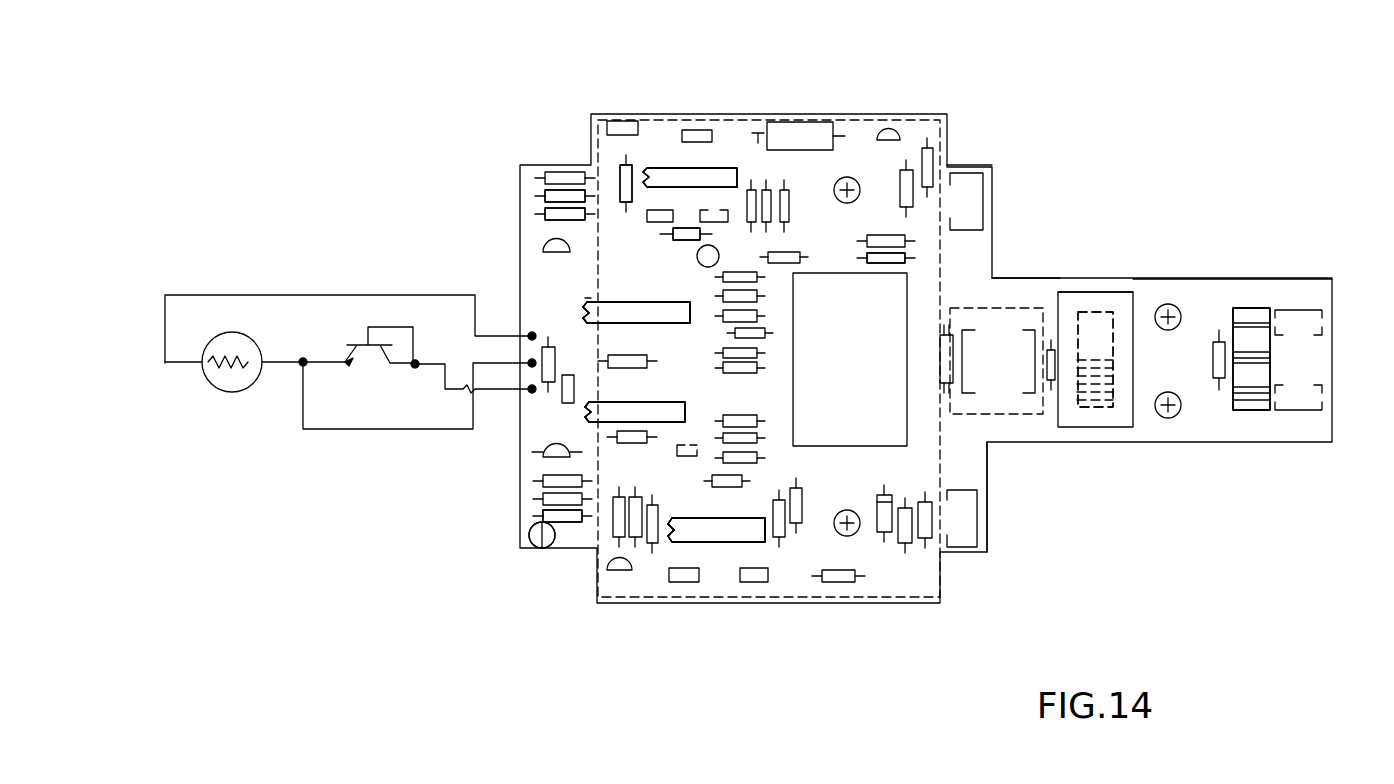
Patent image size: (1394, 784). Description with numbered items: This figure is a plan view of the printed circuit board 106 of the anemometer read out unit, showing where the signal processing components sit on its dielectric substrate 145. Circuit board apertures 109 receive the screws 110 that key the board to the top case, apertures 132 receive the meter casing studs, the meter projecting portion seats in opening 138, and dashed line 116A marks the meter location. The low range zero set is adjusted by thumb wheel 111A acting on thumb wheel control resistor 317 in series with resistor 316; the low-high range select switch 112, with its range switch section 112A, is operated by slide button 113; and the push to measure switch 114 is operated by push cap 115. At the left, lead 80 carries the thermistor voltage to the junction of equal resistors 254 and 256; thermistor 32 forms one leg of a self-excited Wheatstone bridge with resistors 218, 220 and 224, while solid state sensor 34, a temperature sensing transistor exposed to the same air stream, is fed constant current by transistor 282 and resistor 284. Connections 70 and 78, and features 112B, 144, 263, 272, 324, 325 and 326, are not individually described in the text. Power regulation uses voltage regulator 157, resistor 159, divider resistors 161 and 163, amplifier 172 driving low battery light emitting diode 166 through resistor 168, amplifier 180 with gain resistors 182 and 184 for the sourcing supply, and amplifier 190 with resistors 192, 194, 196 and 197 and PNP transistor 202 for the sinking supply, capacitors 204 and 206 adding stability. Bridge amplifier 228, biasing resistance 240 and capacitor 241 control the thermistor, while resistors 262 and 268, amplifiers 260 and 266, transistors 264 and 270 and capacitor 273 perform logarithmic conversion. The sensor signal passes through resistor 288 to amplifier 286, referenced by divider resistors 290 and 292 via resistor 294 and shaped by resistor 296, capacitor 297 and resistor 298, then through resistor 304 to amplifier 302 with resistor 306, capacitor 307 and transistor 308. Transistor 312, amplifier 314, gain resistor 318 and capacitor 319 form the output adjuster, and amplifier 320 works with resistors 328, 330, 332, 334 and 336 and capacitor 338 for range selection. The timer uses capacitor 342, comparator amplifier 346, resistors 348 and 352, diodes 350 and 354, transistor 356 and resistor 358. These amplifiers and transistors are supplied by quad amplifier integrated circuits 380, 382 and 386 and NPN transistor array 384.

The thermistor 32 is at (236, 395).
The solid state sensor 34 is at (373, 302).
The conductor 70 is at (400, 430).
The conductor 78 is at (493, 392).
The lead 80 is at (305, 293).
The printed circuit board 106 is at (978, 262).
The circuit board apertures 109 is at (1168, 303).
The screws 110 is at (1275, 300).
The thumb wheel 111A is at (1252, 315).
The low-high range select switch 112 is at (1093, 295).
The range switch 112A is at (1112, 382).
The relay coil 112B is at (1120, 308).
The slide button 113 is at (1105, 398).
The push to measure switch 114 is at (1007, 395).
The push cap 115 is at (1025, 300).
The dashed line 116A is at (945, 263).
The apertures 132 is at (853, 181).
The opening 138 is at (907, 360).
The board section 144 is at (1215, 290).
The substrate 145 is at (975, 465).
The voltage regulator 157 is at (930, 165).
The resistor 159 is at (930, 535).
The resistor 161 is at (755, 422).
The resistor 163 is at (752, 372).
The light emitting diode 166 is at (537, 548).
The resistor 168 is at (565, 523).
The integrated circuit amplifier 172 is at (607, 404).
The integrated circuit amplifier 180 is at (683, 518).
The resistor 182 is at (712, 480).
The resistor 184 is at (779, 540).
The integrated circuit amplifier 190 is at (705, 522).
The resistor 192 is at (650, 546).
The resistor 194 is at (640, 540).
The resistor 196 is at (905, 537).
The resistor 197 is at (805, 512).
The bipolar transistor 202 is at (608, 567).
The capacitor 204 is at (757, 583).
The capacitor 206 is at (680, 583).
The resistor 218 is at (536, 539).
The resistor 220 is at (540, 499).
The resistor 224 is at (549, 345).
The integrated circuit amplifier 228 is at (633, 406).
The resistance 240 is at (630, 436).
The capacitor 241 is at (562, 393).
The resistor 254 is at (556, 172).
The resistor 256 is at (545, 195).
The integrated circuit amplifier 260 is at (626, 175).
The resistor 262 is at (668, 236).
The resistor 263 is at (623, 121).
The NPN transistor 264 is at (611, 304).
The integrated circuit amplifier 266 is at (683, 180).
The resistor 268 is at (620, 180).
The NPN transistor 270 is at (637, 308).
The resistor 272 is at (714, 233).
The capacitor 273 is at (651, 212).
The transistor 282 is at (546, 240).
The resistor 284 is at (545, 213).
The integrated circuit amplifier 286 is at (661, 408).
The resistor 288 is at (750, 300).
The resistor 290 is at (890, 263).
The resistor 292 is at (972, 190).
The resistor 294 is at (870, 240).
The resistor 296 is at (752, 357).
The capacitor 297 is at (760, 336).
The resistor 298 is at (750, 320).
The integrated circuit amplifier 302 is at (707, 180).
The resistor 304 is at (625, 355).
The resistor 306 is at (789, 206).
The capacitor 307 is at (700, 130).
The NPN transistor 308 is at (665, 308).
The transistor 312 is at (658, 315).
The integrated circuit amplifier 314 is at (762, 116).
The resistor 316 is at (769, 213).
The thumb wheel control resistor 317 is at (1257, 412).
The resistor 318 is at (755, 195).
The capacitor 319 is at (711, 212).
The amplifier 320 is at (730, 522).
The resistor 324 is at (865, 262).
The capacitor 325 is at (1213, 358).
The connector 326 is at (1310, 412).
The resistor 328 is at (970, 530).
The resistor 330 is at (1056, 368).
The resistor 332 is at (712, 258).
The resistor 334 is at (613, 530).
The resistor 336 is at (755, 440).
The capacitor 338 is at (687, 446).
The capacitor 342 is at (820, 122).
The integrated circuit amplifier 346 is at (742, 533).
The resistor 348 is at (850, 583).
The diode 350 is at (908, 176).
The resistor 352 is at (755, 458).
The diode 354 is at (880, 522).
The transistor 356 is at (890, 126).
The resistor 358 is at (945, 338).
The quad operational integrated circuit amplifier 380 is at (700, 545).
The quad operational integrated circuit amplifier 382 is at (685, 412).
The integrated NPN transistor array integrated circuit 384 is at (590, 300).
The quad operational integrated circuit amplifier 386 is at (668, 172).